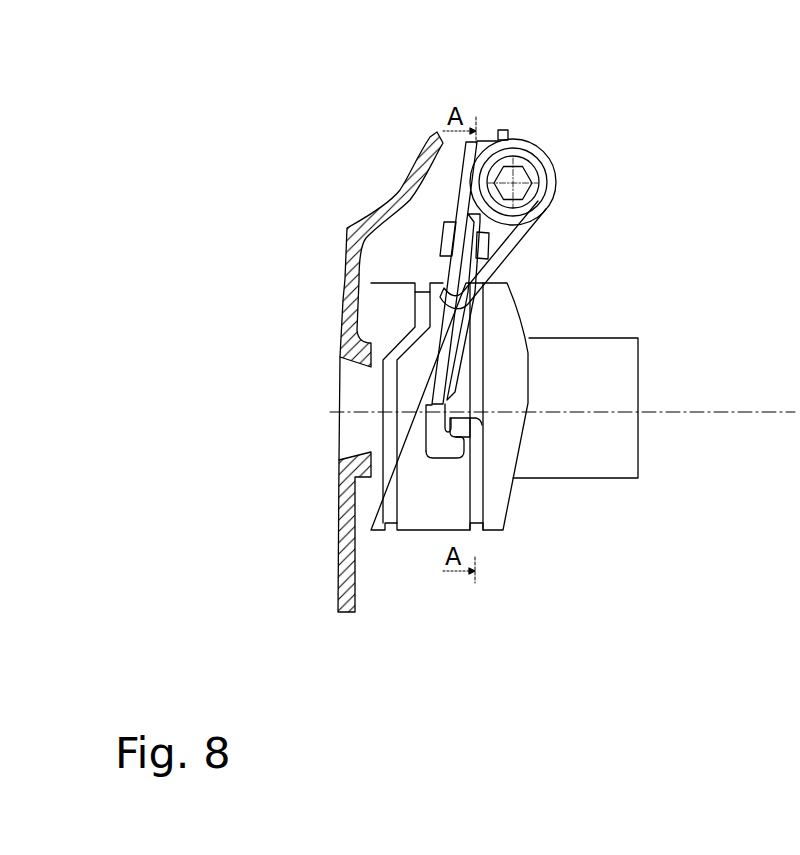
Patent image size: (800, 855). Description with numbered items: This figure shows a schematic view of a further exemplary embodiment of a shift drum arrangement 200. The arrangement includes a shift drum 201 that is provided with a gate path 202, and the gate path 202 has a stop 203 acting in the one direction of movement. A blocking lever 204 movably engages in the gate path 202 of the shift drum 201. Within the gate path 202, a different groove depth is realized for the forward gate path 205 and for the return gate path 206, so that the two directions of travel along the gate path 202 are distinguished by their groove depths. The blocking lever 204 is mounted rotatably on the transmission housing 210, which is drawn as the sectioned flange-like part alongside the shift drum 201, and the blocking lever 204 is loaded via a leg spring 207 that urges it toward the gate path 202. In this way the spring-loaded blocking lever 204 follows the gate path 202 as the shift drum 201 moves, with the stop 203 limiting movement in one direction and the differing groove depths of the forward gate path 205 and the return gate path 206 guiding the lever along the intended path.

The shift drum arrangement 200 is at (685, 147).
The shift drum 201 is at (512, 358).
The gate path 202 is at (462, 425).
The stop 203 is at (447, 457).
The blocking lever 204 is at (447, 358).
The forward gate path 205 is at (432, 430).
The return gate path 206 is at (482, 425).
The leg spring 207 is at (522, 235).
The transmission housing 210 is at (345, 278).